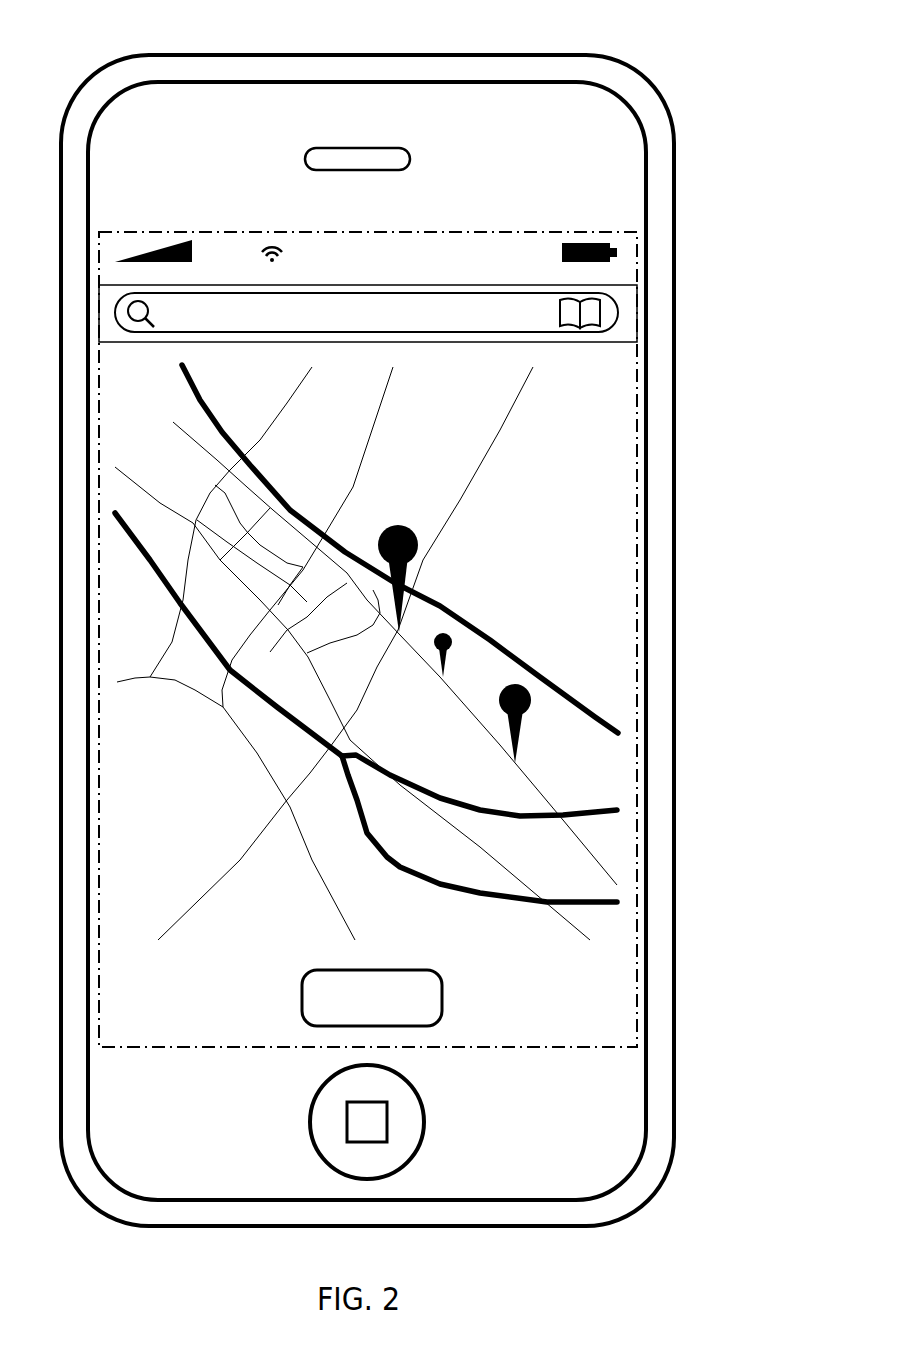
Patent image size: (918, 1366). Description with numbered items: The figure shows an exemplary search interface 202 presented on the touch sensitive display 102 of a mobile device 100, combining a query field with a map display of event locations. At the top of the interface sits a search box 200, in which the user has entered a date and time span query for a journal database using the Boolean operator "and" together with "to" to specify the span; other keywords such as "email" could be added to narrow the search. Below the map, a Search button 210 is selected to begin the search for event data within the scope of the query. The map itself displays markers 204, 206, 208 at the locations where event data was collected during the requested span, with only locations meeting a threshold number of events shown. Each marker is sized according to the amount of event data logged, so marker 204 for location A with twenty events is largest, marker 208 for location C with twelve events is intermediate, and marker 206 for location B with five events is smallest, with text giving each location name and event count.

The mobile device 100 is at (455, 55).
The touch sensitive display 102 is at (570, 232).
The search box 200 is at (500, 317).
The search interface 202 is at (593, 429).
The marker 204 is at (400, 528).
The marker 206 is at (452, 642).
The marker 208 is at (527, 688).
The Search button 210 is at (442, 998).